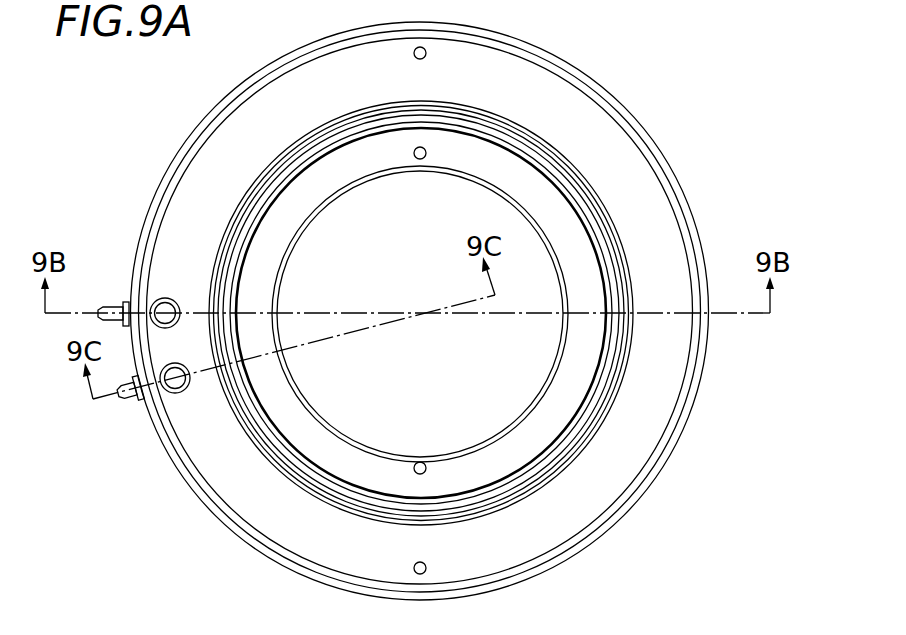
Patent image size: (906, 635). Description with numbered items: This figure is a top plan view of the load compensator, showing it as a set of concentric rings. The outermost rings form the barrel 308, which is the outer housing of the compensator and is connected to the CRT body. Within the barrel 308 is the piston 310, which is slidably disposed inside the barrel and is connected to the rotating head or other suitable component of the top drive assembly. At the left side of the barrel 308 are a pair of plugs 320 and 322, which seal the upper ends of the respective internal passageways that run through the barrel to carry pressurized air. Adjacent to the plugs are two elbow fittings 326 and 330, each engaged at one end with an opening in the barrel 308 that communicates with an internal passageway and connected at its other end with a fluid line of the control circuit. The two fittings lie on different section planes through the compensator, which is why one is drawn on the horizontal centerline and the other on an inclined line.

The barrel 308 is at (558, 113).
The piston 310 is at (556, 208).
The plug 320 is at (165, 298).
The plug 322 is at (172, 393).
The elbow fitting 326 is at (105, 305).
The elbow fitting 330 is at (123, 396).